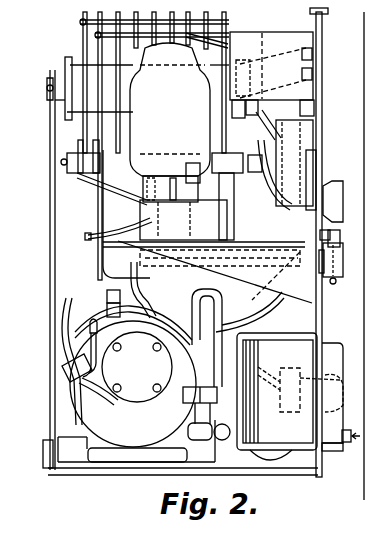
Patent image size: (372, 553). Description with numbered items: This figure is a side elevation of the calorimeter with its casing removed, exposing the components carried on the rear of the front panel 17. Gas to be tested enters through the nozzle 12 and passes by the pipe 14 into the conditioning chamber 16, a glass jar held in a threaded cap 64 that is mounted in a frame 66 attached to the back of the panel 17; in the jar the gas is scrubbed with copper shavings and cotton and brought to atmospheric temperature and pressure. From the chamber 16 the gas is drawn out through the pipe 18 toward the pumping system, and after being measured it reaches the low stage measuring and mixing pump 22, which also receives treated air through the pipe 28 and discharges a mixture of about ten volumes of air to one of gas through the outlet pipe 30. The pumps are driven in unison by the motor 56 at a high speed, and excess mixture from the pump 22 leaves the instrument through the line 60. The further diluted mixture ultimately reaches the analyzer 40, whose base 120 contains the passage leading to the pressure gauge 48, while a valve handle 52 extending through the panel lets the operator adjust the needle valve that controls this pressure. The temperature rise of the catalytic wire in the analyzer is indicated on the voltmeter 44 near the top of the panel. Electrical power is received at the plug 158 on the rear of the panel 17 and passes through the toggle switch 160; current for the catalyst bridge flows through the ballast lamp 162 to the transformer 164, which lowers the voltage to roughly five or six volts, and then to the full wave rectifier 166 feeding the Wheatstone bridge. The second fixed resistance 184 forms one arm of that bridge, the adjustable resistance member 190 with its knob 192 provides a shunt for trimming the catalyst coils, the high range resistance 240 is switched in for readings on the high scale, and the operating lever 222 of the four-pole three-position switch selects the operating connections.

The nozzle 12 is at (352, 443).
The pipe 14 is at (278, 450).
The conditioning chamber 16 is at (344, 393).
The front panel 17 is at (317, 305).
The pipe 18 is at (137, 367).
The low stage measuring and mixing pump 22 is at (137, 398).
The pipe 28 is at (132, 325).
The outlet pipe 30 is at (185, 413).
The analyzer 40 is at (96, 218).
The voltmeter 44 is at (318, 56).
The pressure gauge 48 is at (306, 136).
The valve handle 52 is at (342, 261).
The motor 56 is at (123, 436).
The line 60 is at (68, 353).
The threaded cap 64 is at (253, 452).
The frame 66 is at (267, 338).
The base 120 is at (105, 257).
The plug 158 is at (63, 428).
The toggle switch 160 is at (357, 424).
The ballast lamp 162 is at (170, 109).
The transformer 164 is at (249, 40).
The full wave rectifier 166 is at (98, 57).
The second fixed resistance 184 is at (192, 157).
The adjustable resistance member 190 is at (318, 164).
The knob 192 is at (334, 184).
The operating lever 222 is at (350, 290).
The high range resistance 240 is at (80, 178).